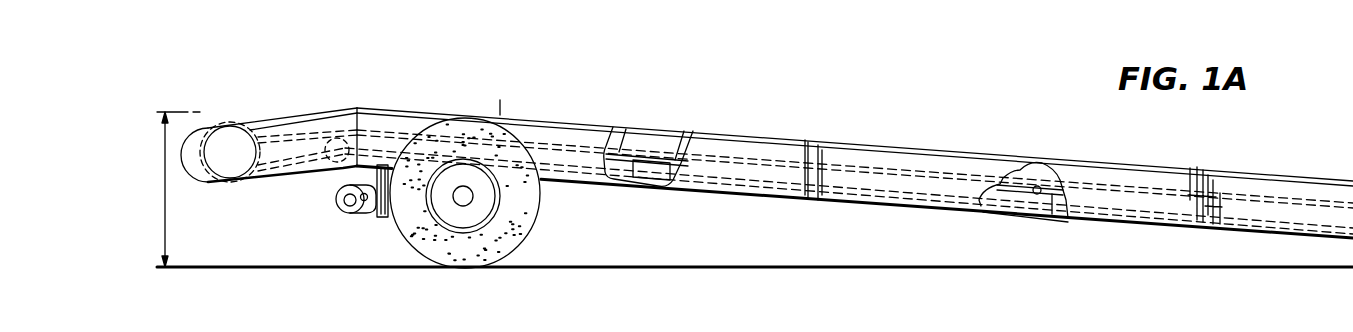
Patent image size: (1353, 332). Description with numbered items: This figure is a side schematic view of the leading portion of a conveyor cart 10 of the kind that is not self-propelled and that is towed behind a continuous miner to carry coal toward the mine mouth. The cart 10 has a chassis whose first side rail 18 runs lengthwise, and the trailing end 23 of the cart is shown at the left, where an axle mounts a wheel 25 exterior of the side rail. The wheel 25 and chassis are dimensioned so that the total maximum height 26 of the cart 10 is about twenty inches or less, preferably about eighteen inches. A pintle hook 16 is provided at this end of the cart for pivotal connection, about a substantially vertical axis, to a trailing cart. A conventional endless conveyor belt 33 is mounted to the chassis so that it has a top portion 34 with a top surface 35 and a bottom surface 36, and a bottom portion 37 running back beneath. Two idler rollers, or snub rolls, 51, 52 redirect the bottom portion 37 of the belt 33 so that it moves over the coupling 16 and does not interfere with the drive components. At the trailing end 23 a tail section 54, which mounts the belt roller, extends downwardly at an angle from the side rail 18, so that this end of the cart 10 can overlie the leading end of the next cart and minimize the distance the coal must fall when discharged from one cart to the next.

The conveyor cart 10 is at (1278, 151).
The pintle hook 16 is at (355, 218).
The first side rail 18 is at (1122, 173).
The trailing end 23 is at (197, 85).
The wheel 25 is at (542, 223).
The total maximum height 26 is at (166, 192).
The endless conveyor belt 33 is at (638, 167).
The top portion 34 is at (631, 125).
The top surface 35 is at (651, 150).
The bottom surface 36 is at (677, 153).
The bottom portion 37 is at (1005, 211).
The idler roller 51 is at (330, 178).
The idler roller 52 is at (500, 100).
The tail section 54 is at (352, 100).